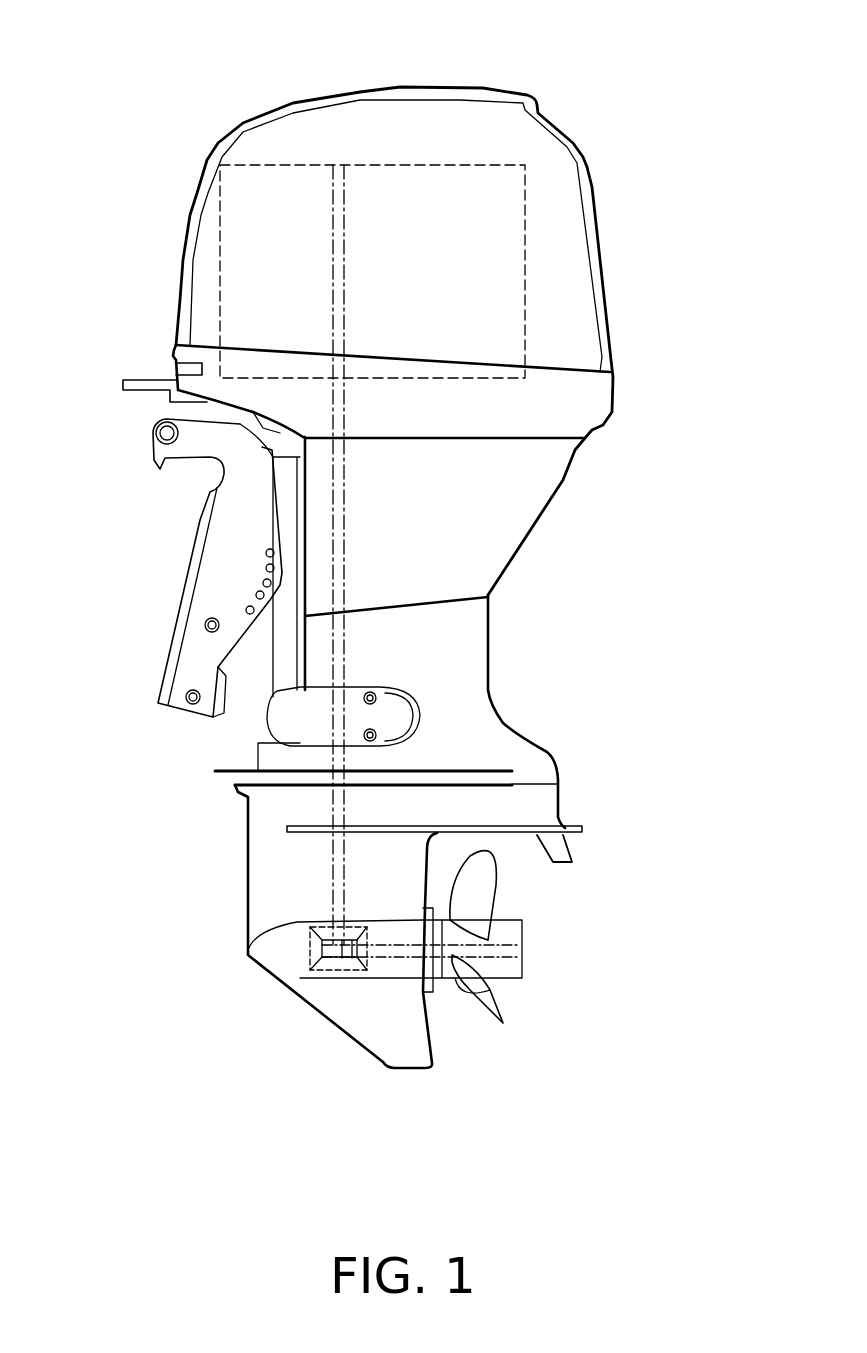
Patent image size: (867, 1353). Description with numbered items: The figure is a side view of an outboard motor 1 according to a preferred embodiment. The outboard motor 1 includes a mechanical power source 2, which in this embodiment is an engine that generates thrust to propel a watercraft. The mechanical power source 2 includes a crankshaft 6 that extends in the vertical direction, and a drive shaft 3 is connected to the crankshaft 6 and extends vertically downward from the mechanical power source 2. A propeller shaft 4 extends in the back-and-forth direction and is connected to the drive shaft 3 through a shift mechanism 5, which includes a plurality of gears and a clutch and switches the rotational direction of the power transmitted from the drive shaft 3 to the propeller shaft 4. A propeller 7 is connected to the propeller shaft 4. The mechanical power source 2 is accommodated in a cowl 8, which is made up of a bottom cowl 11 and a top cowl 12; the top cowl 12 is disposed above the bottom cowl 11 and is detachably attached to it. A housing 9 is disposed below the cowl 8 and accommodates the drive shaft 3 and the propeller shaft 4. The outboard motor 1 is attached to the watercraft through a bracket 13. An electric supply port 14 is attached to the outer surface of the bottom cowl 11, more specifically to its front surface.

The outboard motor 1 is at (182, 88).
The mechanical power source 2 is at (220, 232).
The drive shaft 3 is at (345, 552).
The propeller shaft 4 is at (402, 960).
The shift mechanism 5 is at (300, 973).
The crankshaft 6 is at (335, 302).
The propeller 7 is at (470, 990).
The cowl 8 is at (624, 302).
The housing 9 is at (470, 642).
The bottom cowl 11 is at (594, 400).
The top cowl 12 is at (575, 257).
The bracket 13 is at (217, 530).
The electric supply port 14 is at (180, 371).